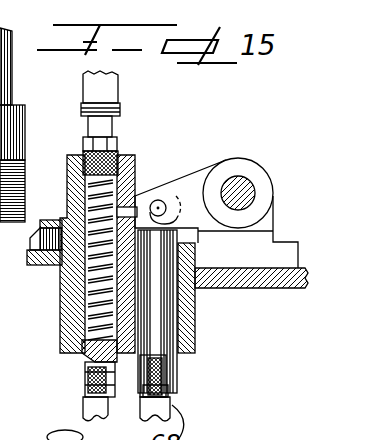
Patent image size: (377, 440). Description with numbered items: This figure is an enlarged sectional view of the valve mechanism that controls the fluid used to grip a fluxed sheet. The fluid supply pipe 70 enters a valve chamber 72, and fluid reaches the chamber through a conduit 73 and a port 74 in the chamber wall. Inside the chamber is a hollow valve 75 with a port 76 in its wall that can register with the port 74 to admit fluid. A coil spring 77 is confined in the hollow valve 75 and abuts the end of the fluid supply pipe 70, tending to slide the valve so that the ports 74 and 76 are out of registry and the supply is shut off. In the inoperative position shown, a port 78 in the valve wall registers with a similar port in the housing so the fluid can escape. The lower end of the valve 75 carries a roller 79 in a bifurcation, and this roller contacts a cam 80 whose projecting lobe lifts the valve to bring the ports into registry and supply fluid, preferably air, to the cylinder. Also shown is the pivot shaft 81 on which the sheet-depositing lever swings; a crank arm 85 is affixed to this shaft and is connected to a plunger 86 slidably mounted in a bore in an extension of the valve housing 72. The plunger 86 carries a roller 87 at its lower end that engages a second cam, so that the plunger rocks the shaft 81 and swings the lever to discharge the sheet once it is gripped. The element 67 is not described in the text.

The arm 67 is at (55, 433).
The fluid supply pipe 70 is at (110, 90).
The valve chamber 72 is at (124, 185).
The conduit 73 is at (33, 237).
The port 74 is at (63, 220).
The hollow valve 75 is at (83, 355).
The port 76 is at (86, 270).
The coil spring 77 is at (88, 272).
The port 78 is at (135, 198).
The roller 79 is at (98, 380).
The cam 80 is at (108, 416).
The pivot shaft 81 is at (250, 187).
The crank arm 85 is at (187, 183).
The plunger 86 is at (158, 320).
The roller 87 is at (168, 400).